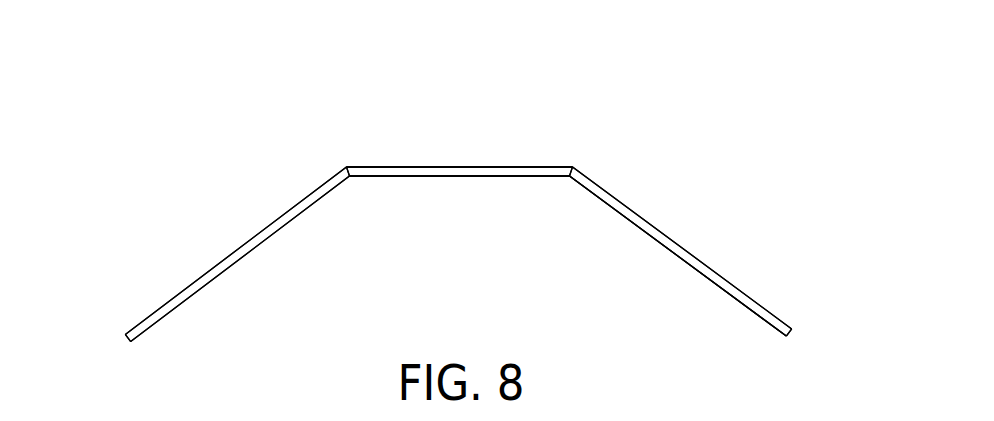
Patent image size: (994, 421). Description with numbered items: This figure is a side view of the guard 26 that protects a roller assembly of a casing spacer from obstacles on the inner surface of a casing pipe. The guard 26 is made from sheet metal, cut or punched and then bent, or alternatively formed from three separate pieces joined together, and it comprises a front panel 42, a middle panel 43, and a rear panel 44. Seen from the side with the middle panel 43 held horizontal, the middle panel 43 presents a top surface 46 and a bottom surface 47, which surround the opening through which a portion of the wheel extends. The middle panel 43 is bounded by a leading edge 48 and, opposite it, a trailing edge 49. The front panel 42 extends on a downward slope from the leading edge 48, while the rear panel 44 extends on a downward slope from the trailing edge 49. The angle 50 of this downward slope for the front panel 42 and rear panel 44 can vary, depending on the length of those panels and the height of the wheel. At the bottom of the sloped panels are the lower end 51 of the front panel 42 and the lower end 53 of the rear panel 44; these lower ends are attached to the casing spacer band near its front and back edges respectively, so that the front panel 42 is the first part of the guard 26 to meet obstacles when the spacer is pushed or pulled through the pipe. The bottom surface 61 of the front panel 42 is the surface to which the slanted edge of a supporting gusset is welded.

The guard 26 is at (735, 194).
The front panel 42 is at (762, 304).
The middle panel 43 is at (534, 167).
The rear panel 44 is at (228, 257).
The top surface 46 is at (417, 167).
The bottom surface 47 is at (397, 177).
The leading edge 48 is at (572, 168).
The trailing edge 49 is at (346, 167).
The angle 50 is at (622, 222).
The lower end of front panel 51 is at (795, 334).
The lower end of rear panel 53 is at (124, 345).
The bottom surface of front panel 61 is at (697, 270).